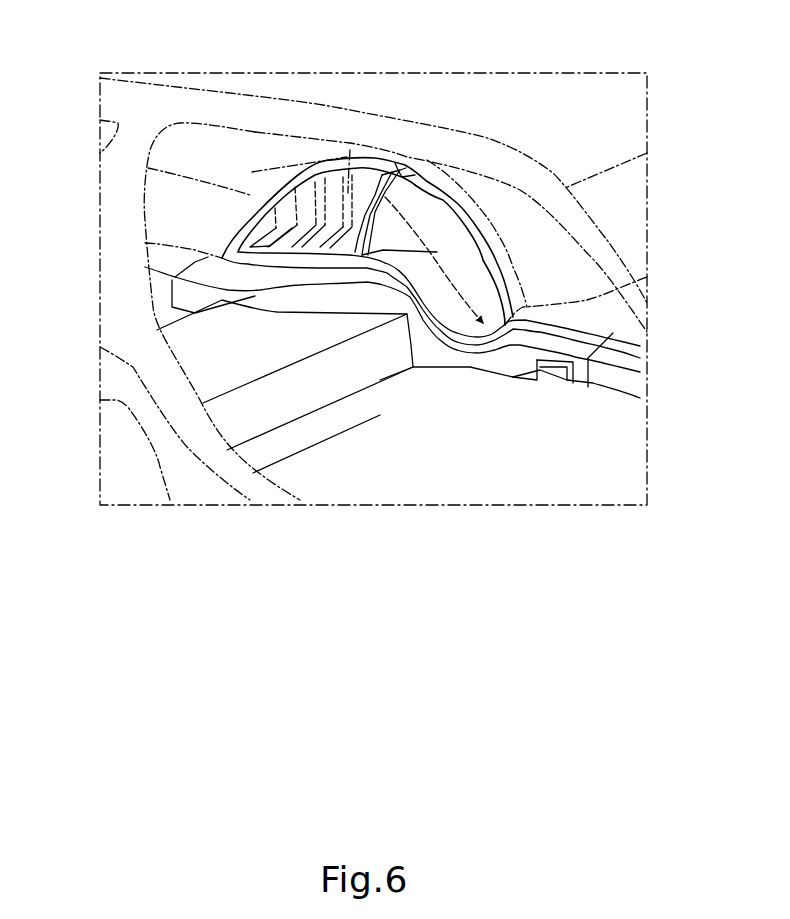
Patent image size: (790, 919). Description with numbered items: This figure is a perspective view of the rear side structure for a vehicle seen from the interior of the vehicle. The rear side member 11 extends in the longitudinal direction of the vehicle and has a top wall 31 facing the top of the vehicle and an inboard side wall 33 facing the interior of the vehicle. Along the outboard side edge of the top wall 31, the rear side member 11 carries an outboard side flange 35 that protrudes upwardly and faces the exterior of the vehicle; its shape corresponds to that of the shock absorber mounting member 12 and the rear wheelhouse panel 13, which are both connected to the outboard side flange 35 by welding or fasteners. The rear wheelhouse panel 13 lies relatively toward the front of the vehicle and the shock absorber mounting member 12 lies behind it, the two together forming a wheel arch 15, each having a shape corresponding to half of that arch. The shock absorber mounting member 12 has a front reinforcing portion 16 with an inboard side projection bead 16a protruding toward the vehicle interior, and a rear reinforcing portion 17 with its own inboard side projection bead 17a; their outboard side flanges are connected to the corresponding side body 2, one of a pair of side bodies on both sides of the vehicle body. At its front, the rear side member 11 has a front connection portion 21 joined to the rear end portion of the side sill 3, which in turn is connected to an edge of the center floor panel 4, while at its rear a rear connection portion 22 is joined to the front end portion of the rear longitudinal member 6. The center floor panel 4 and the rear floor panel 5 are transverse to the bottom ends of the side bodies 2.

The side body 2 is at (520, 262).
The side sill 3 is at (630, 362).
The center floor panel 4 is at (628, 483).
The rear floor panel 5 is at (207, 355).
The rear longitudinal member 6 is at (165, 253).
The rear side member 11 is at (603, 330).
The shock absorber mounting member 12 is at (347, 150).
The rear wheelhouse panel 13 is at (487, 210).
The wheel arch 15 is at (417, 160).
The front reinforcing portion 16 is at (395, 197).
The inboard side projection bead 16a is at (353, 160).
The rear reinforcing portion 17 is at (248, 203).
The inboard side projection bead 17a is at (256, 203).
The front connection portion 21 is at (607, 338).
The rear connection portion 22 is at (208, 256).
The top wall 31 is at (423, 330).
The inboard side wall 33 is at (440, 360).
The outboard side flange 35 is at (392, 273).